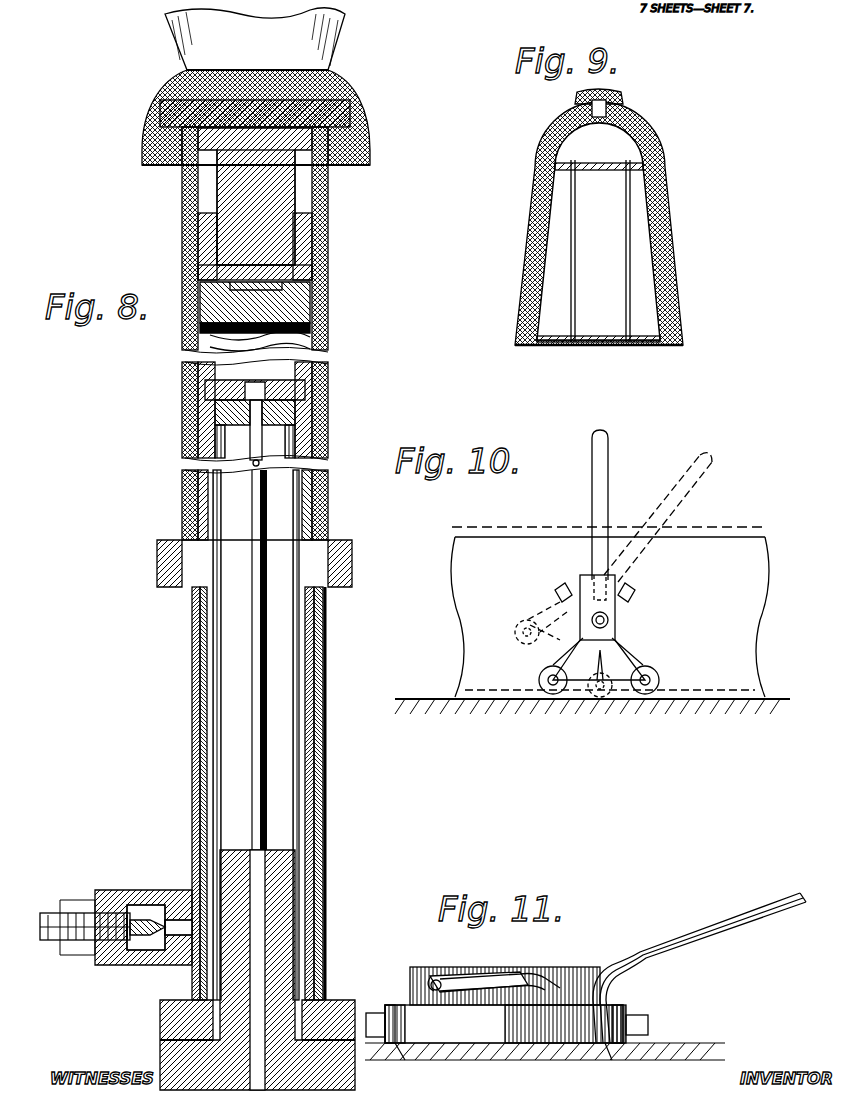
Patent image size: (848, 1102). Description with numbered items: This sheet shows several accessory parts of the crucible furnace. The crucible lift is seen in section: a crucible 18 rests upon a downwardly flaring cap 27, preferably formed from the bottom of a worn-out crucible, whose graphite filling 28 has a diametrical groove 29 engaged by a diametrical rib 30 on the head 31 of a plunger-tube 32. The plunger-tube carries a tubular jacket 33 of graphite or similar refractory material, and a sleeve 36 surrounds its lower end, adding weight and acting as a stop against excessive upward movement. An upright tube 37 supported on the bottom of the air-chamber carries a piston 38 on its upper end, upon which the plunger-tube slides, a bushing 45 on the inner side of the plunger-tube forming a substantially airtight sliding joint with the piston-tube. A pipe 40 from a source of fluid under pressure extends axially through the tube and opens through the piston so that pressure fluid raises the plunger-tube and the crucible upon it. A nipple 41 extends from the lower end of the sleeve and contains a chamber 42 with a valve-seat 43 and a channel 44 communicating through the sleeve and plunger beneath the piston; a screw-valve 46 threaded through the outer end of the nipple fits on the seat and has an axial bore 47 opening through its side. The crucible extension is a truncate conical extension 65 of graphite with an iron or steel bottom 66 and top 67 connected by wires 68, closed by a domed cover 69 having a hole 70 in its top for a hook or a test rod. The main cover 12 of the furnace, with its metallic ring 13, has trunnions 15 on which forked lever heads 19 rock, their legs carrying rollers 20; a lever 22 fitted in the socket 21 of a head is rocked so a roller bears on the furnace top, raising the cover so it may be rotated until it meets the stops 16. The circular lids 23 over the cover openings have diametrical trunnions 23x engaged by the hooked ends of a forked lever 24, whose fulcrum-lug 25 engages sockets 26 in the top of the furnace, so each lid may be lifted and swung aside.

In FIG. 10, the circular cover 12 is at (592, 620).
In FIG. 11, the metallic ring 13 is at (504, 1024).
In FIG. 10, the trunnions 15 is at (610, 620).
In FIG. 11, the trunnions 15 is at (376, 1043).
In FIG. 11, the stops 16 is at (383, 1010).
In FIG. 8, the crucibles 18 is at (255, 39).
In FIG. 10, the forked lever heads 19 is at (622, 662).
In FIG. 10, the rollers 20 is at (538, 676).
In FIG. 10, the socket 21 is at (585, 580).
In FIG. 10, the lever 22 is at (600, 515).
In FIG. 11, the circular lids 23 is at (490, 968).
In FIG. 11, the diametrical trunnions 23x is at (432, 981).
In FIG. 11, the forked lever 24 is at (620, 964).
In FIG. 11, the fulcrum-lug 25 is at (575, 1046).
In FIG. 11, the sockets 26 is at (412, 1052).
In FIG. 8, the downwardly flaring cap 27 is at (350, 105).
In FIG. 8, the filling 28 is at (215, 104).
In FIG. 8, the diametrical groove 29 is at (335, 88).
In FIG. 8, the diametrical rib 30 is at (262, 150).
In FIG. 8, the head 31 is at (292, 242).
In FIG. 8, the plunger-tube 32 is at (305, 340).
In FIG. 8, the tubular jacket 33 is at (328, 312).
In FIG. 8, the sleeve 36 is at (327, 775).
In FIG. 8, the upright tube 37 is at (299, 810).
In FIG. 8, the piston 38 is at (328, 394).
In FIG. 8, the pipe 40 is at (252, 522).
In FIG. 8, the nipple 41 is at (143, 914).
In FIG. 8, the chamber 42 is at (142, 900).
In FIG. 8, the valve-seat 43 is at (130, 945).
In FIG. 8, the channel 44 is at (180, 935).
In FIG. 8, the bushing 45 is at (200, 1026).
In FIG. 8, the screw-valve 46 is at (82, 958).
In FIG. 8, the axial bore 47 is at (128, 915).
In FIG. 9, the truncate conical extension 65 is at (670, 252).
In FIG. 9, the bottom 66 is at (612, 336).
In FIG. 9, the top 67 is at (599, 149).
In FIG. 9, the wires 68 is at (624, 248).
In FIG. 9, the domed cover 69 is at (640, 106).
In FIG. 9, the hole 70 is at (598, 108).